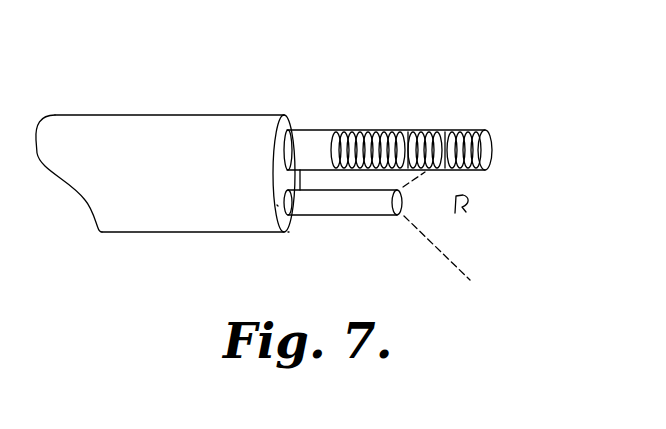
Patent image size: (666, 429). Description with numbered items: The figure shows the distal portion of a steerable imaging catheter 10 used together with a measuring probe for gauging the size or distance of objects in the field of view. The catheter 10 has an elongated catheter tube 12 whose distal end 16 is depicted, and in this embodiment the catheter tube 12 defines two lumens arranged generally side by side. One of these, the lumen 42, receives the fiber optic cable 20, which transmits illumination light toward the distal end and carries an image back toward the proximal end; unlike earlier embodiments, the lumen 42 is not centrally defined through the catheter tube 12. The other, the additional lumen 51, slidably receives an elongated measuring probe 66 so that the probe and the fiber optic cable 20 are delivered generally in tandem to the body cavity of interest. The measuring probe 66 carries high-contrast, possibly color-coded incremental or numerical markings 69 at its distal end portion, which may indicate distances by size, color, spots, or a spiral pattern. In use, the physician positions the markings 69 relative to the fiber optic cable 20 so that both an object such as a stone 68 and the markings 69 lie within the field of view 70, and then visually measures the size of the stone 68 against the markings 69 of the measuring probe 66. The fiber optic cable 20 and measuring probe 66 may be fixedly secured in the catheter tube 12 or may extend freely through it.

The steerable imaging catheter 10 is at (112, 115).
The catheter tube 12 is at (202, 115).
The additional lumen 51 is at (281, 140).
The measuring probe 66 is at (377, 130).
The markings 69 is at (413, 137).
The field of view 70 is at (468, 128).
The fiber optic cable 20 is at (360, 216).
The lumen 42 is at (277, 205).
The distal end 16 is at (288, 232).
The stone 68 is at (464, 209).